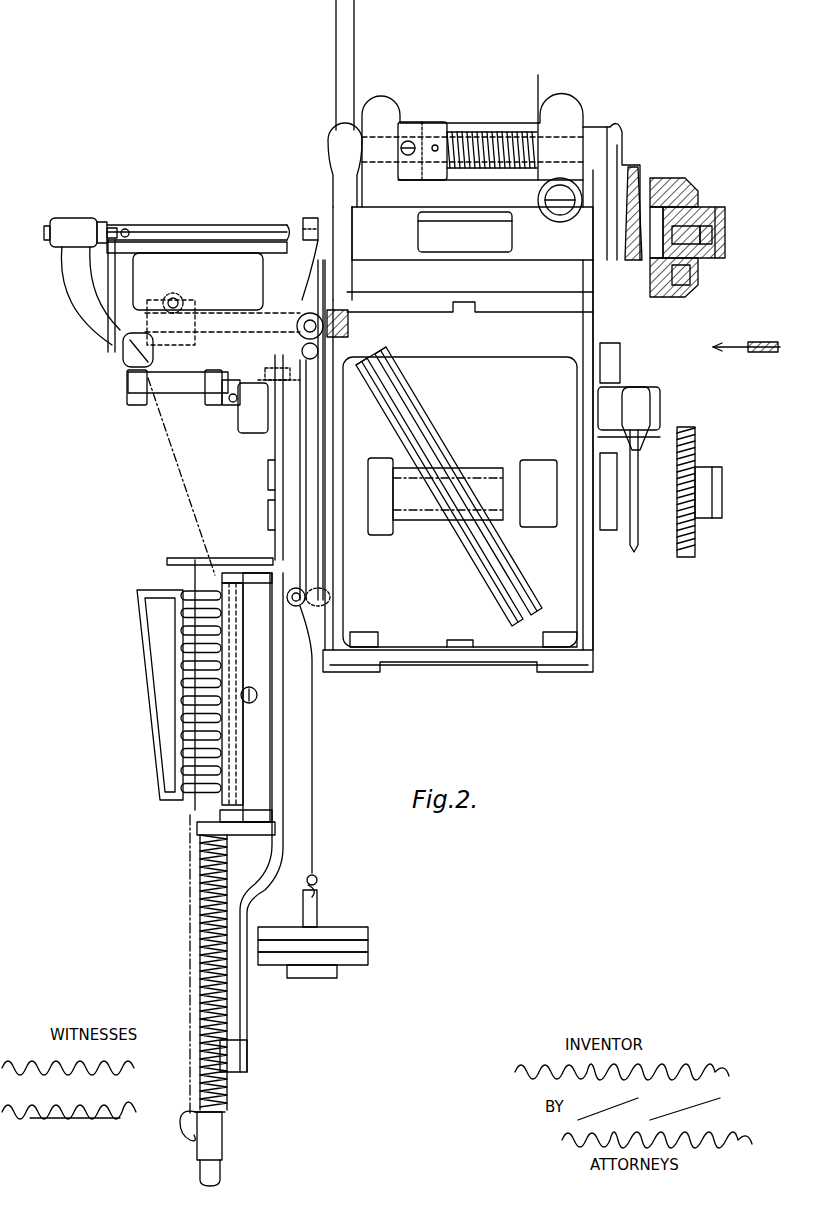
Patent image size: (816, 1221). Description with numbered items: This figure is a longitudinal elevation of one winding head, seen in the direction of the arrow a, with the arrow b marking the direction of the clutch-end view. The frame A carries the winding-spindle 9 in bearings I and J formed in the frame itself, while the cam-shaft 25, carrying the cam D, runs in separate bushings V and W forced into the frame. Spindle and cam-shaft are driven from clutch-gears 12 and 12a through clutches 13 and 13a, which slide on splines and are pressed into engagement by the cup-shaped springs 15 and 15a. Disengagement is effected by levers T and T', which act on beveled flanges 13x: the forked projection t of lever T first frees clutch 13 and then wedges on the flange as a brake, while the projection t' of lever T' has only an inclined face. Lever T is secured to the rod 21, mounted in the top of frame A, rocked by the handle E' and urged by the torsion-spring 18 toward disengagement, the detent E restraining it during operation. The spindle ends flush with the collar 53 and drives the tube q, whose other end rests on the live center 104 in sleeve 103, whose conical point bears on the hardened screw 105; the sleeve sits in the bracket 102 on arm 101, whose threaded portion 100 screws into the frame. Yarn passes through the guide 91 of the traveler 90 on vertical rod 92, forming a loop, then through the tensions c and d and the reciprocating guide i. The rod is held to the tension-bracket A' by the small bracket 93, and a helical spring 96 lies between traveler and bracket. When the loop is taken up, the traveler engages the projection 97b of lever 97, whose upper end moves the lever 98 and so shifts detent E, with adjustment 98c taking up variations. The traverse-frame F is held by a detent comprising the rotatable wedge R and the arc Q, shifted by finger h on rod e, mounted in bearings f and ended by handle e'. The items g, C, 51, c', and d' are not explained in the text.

The handle E' is at (362, 65).
The detent E is at (345, 211).
The collar 53 is at (318, 216).
The frame A is at (458, 383).
The bearing I is at (365, 233).
The winding-spindle 9 is at (465, 232).
The bearing J is at (552, 212).
The torsion-spring 18 is at (490, 132).
The rod 21 is at (547, 116).
The traverse-frame F is at (312, 300).
The threaded portion 100 is at (350, 322).
The cam D is at (425, 425).
The bushing V is at (380, 496).
The bushing W is at (544, 493).
The cam-shaft 25 is at (412, 505).
The lever T is at (613, 174).
The forked projection t is at (642, 196).
The clutch 13 is at (656, 182).
The clutch-gear 12 is at (690, 180).
The groove g is at (652, 232).
The beveled flange 13x is at (630, 282).
The cup-shaped spring 15 is at (620, 362).
The arrow b is at (746, 362).
The lever T' is at (630, 455).
The projection t' is at (659, 418).
The clutch-gear 12a is at (688, 430).
The clutch 13a is at (640, 545).
The cup-shaped spring 15a is at (612, 530).
The tube q is at (185, 226).
The hardened screw 105 is at (47, 226).
The sleeve 103 is at (100, 222).
The live center 104 is at (110, 228).
The reciprocating guide i is at (128, 228).
The bracket 102 is at (80, 298).
The plate C is at (108, 344).
The arm 101 is at (222, 319).
The handle e' is at (112, 362).
The rod e is at (178, 473).
The bearing f is at (137, 405).
The finger h is at (232, 405).
The rotatable wedge R is at (253, 408).
The arc Q is at (272, 368).
The lever 51 is at (285, 447).
The lever 98 is at (305, 575).
The adjustment 98c is at (290, 590).
The tension c is at (197, 677).
The frame c' is at (137, 695).
The tension d is at (212, 686).
The tooth d' is at (173, 657).
The tension-bracket A' is at (247, 697).
The lever 97 is at (268, 866).
The arrow a is at (313, 630).
The small bracket 93 is at (228, 835).
The helical spring 96 is at (200, 962).
The projection 97b is at (240, 1072).
The traveler 90 is at (222, 1136).
The vertical rod 92 is at (220, 1170).
The guide 91 is at (180, 1116).